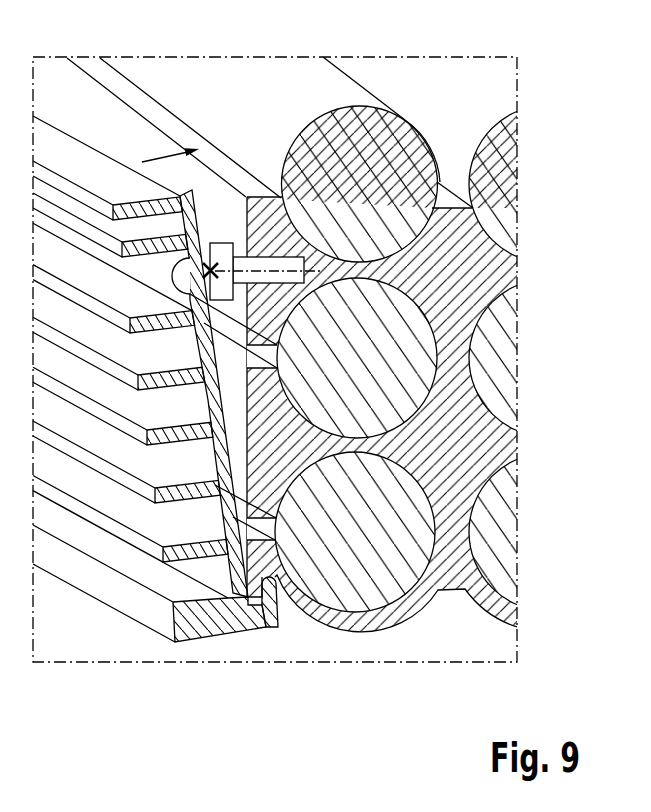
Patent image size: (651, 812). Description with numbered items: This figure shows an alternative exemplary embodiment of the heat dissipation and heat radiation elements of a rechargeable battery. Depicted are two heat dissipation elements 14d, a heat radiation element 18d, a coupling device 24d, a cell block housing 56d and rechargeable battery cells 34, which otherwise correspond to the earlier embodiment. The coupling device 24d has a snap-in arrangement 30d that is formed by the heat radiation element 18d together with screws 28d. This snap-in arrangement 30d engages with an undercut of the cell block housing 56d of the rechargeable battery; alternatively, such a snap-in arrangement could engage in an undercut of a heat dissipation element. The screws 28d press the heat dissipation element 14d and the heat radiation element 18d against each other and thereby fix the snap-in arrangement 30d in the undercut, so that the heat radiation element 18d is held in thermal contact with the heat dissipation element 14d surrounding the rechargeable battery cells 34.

The screws 28d is at (223, 254).
The rechargeable battery cells 34 is at (350, 165).
The heat dissipation element 14d is at (503, 271).
The heat radiation element 18d is at (203, 623).
The snap-in arrangement 30d is at (270, 598).
The coupling device 24d is at (286, 640).
The cell block housing 56d is at (357, 625).